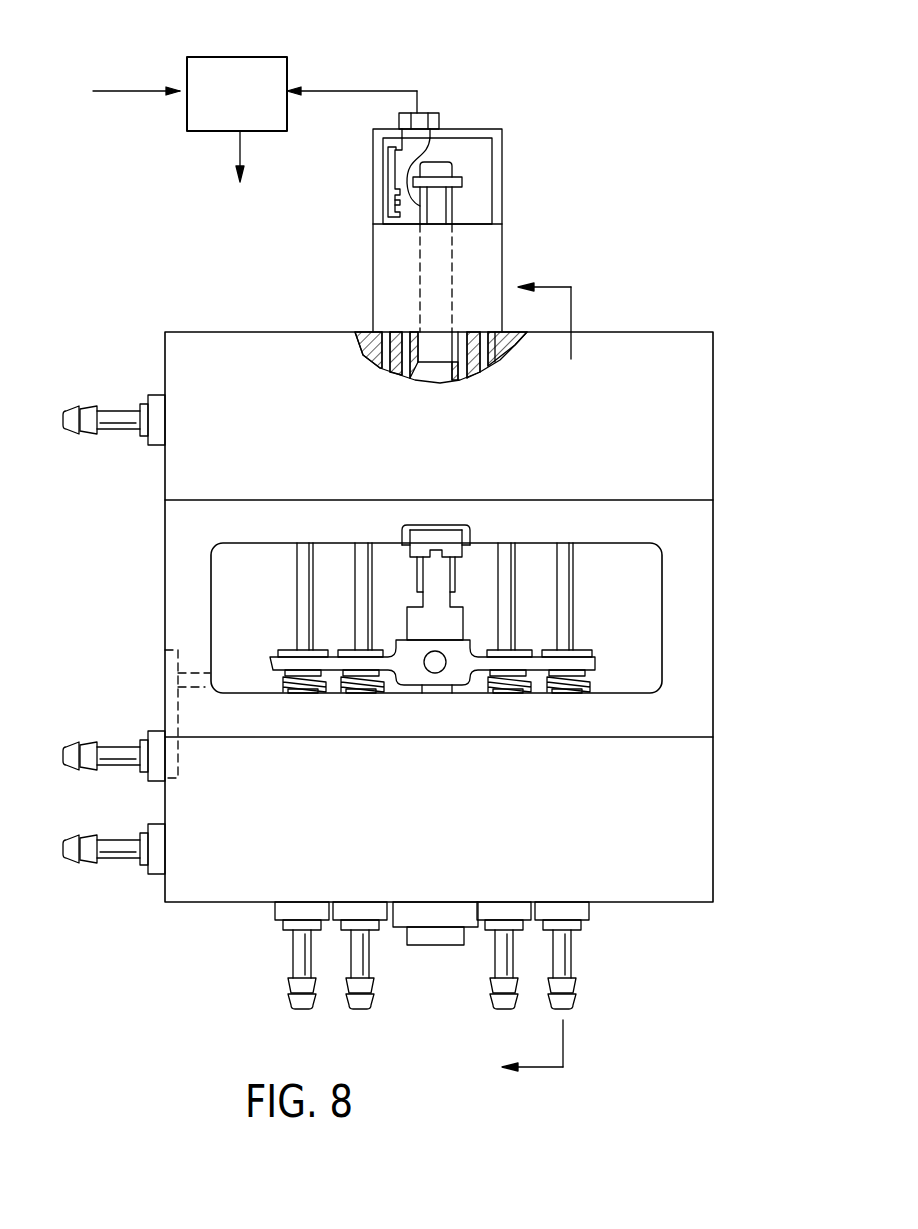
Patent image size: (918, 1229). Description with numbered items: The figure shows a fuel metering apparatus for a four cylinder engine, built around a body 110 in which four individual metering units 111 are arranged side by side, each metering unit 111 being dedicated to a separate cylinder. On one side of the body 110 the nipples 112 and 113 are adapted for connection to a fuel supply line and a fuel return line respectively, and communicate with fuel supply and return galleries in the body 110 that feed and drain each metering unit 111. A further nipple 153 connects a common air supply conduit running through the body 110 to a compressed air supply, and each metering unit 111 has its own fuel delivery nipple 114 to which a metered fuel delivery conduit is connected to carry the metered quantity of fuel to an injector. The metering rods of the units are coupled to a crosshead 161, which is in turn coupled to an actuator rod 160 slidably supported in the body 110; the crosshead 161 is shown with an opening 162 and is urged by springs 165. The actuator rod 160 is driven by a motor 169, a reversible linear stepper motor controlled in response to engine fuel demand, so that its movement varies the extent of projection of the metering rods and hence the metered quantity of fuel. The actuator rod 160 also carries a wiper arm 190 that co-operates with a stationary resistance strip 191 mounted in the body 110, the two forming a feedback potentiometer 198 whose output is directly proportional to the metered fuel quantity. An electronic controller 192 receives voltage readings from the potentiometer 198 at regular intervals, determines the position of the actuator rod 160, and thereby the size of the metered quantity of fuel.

The electronic controller 192 is at (272, 62).
The resistance strip 191 is at (393, 160).
The feed back potentiometer 198 is at (388, 205).
The wiper arm 190 is at (405, 198).
The motor 169 is at (485, 240).
The actuator rod 160 is at (433, 340).
The body 110 is at (623, 444).
The nipple 153 is at (118, 418).
The nipple 113 is at (113, 757).
The nipple 112 is at (110, 848).
The fuel delivery nipple 114 is at (358, 950).
The metering unit 111 is at (360, 578).
The crosshead 161 is at (595, 663).
The opening 162 is at (437, 668).
The springs 165 is at (348, 688).